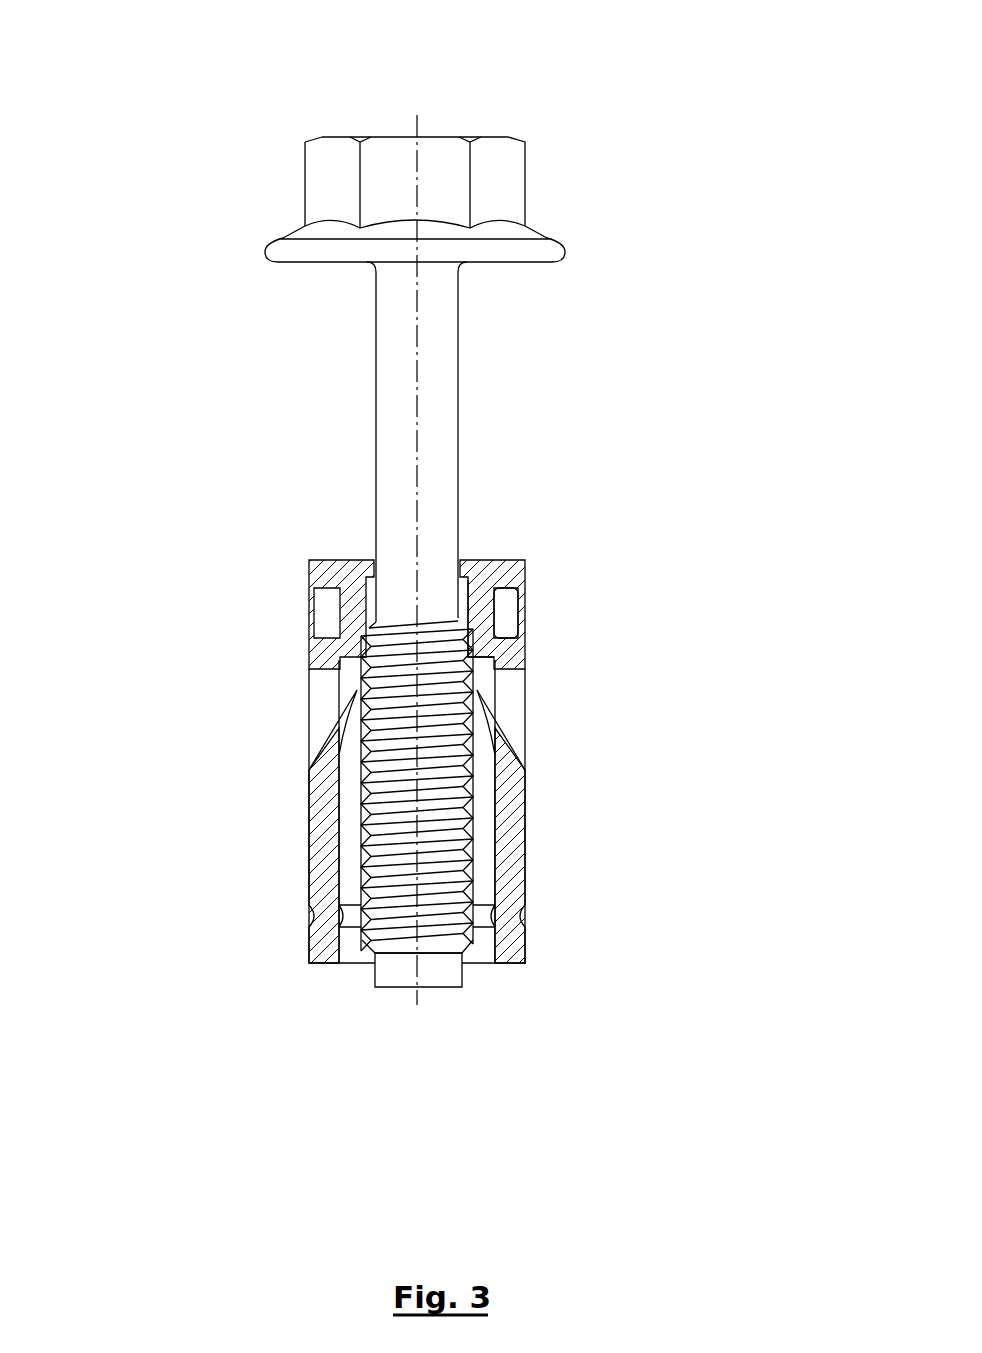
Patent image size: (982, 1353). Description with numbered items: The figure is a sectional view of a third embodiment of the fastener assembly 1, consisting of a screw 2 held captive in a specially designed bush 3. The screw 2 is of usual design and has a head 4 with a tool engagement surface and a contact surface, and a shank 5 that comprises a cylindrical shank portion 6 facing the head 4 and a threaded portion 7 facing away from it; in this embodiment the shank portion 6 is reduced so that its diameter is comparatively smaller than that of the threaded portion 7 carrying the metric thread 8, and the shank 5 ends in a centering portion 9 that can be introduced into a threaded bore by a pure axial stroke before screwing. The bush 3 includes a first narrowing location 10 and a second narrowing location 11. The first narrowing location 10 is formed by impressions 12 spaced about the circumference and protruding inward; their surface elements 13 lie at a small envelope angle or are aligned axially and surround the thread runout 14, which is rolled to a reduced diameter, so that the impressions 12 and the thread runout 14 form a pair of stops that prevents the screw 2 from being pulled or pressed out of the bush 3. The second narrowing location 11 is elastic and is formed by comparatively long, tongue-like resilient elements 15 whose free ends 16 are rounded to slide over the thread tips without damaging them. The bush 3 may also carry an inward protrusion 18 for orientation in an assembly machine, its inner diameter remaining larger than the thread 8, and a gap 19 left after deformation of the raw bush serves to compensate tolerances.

The fastener assembly 1 is at (704, 388).
The screw 2 is at (478, 517).
The bush 3 is at (543, 882).
The head 4 is at (543, 159).
The shank 5 is at (417, 946).
The shank portion 6 is at (433, 325).
The threaded portion 7 is at (465, 812).
The thread 8 is at (473, 856).
The centering portion 9 is at (425, 964).
The first narrowing location 10 is at (338, 607).
The second narrowing location 11 is at (339, 705).
The impressions 12 is at (497, 606).
The surface elements 13 is at (486, 582).
The thread runout 14 is at (478, 641).
The resilient elements 15 is at (486, 748).
The free ends 16 is at (478, 703).
The protrusion 18 is at (503, 908).
The gap 19 is at (361, 856).